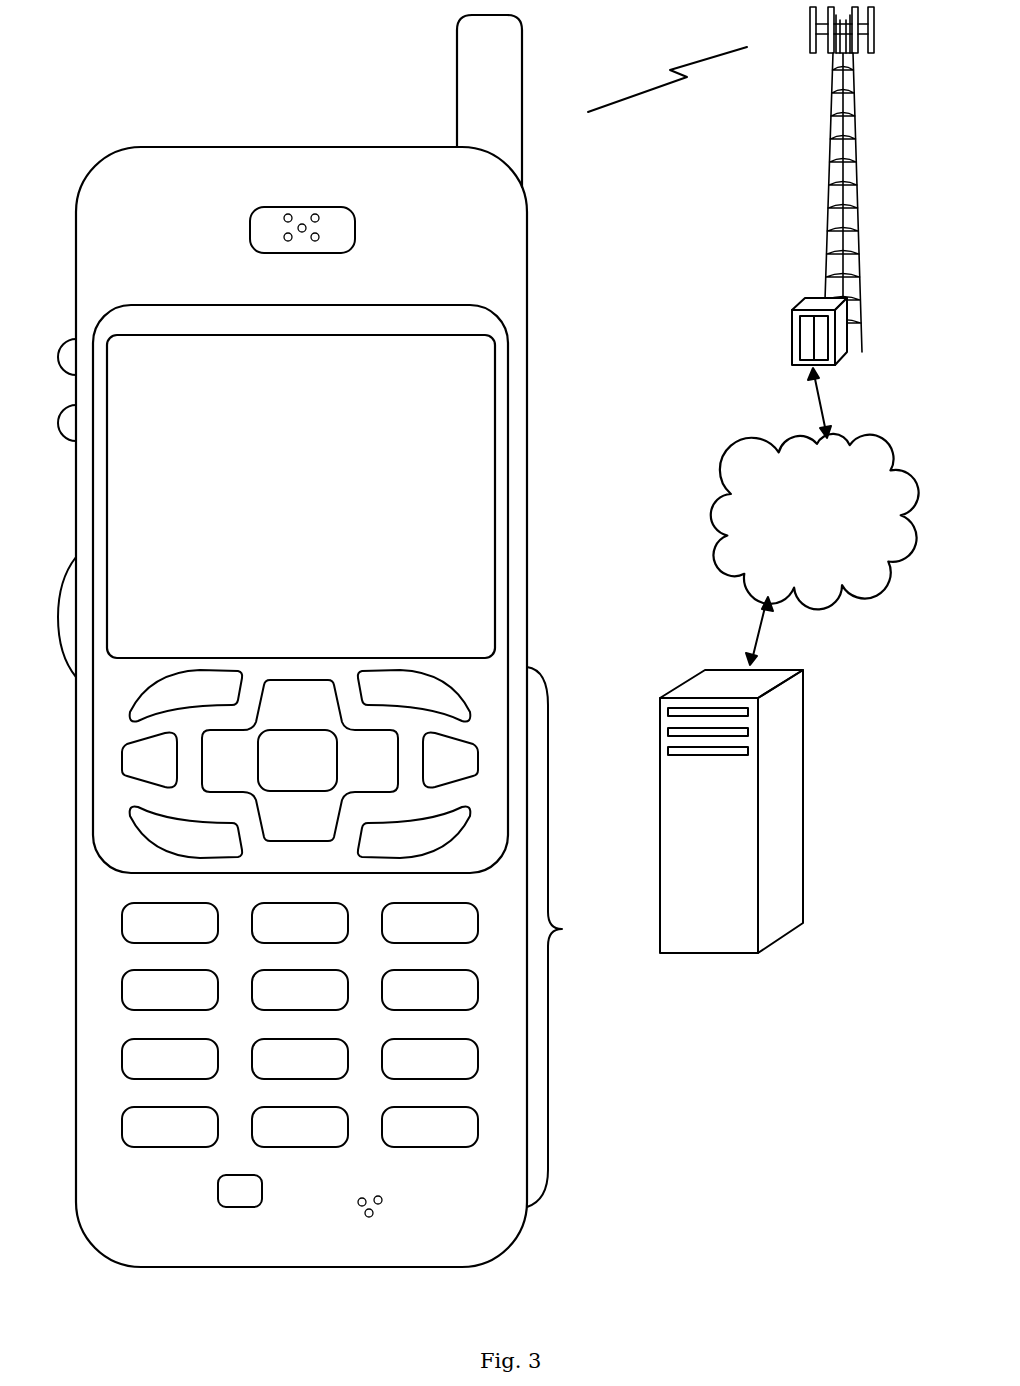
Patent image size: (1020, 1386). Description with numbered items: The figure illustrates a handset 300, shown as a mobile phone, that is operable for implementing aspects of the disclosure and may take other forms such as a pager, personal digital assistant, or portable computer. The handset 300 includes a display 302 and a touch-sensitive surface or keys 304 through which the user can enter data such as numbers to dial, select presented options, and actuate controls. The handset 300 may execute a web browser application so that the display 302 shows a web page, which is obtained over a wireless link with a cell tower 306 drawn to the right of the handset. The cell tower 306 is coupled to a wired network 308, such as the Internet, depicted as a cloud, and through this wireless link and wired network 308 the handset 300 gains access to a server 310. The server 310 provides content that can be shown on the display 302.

The handset 300 is at (332, 658).
The display 302 is at (497, 350).
The touch-sensitive surface or keys 304 is at (566, 937).
The cell tower 306 is at (826, 201).
The wired network 308 is at (730, 576).
The server 310 is at (706, 957).